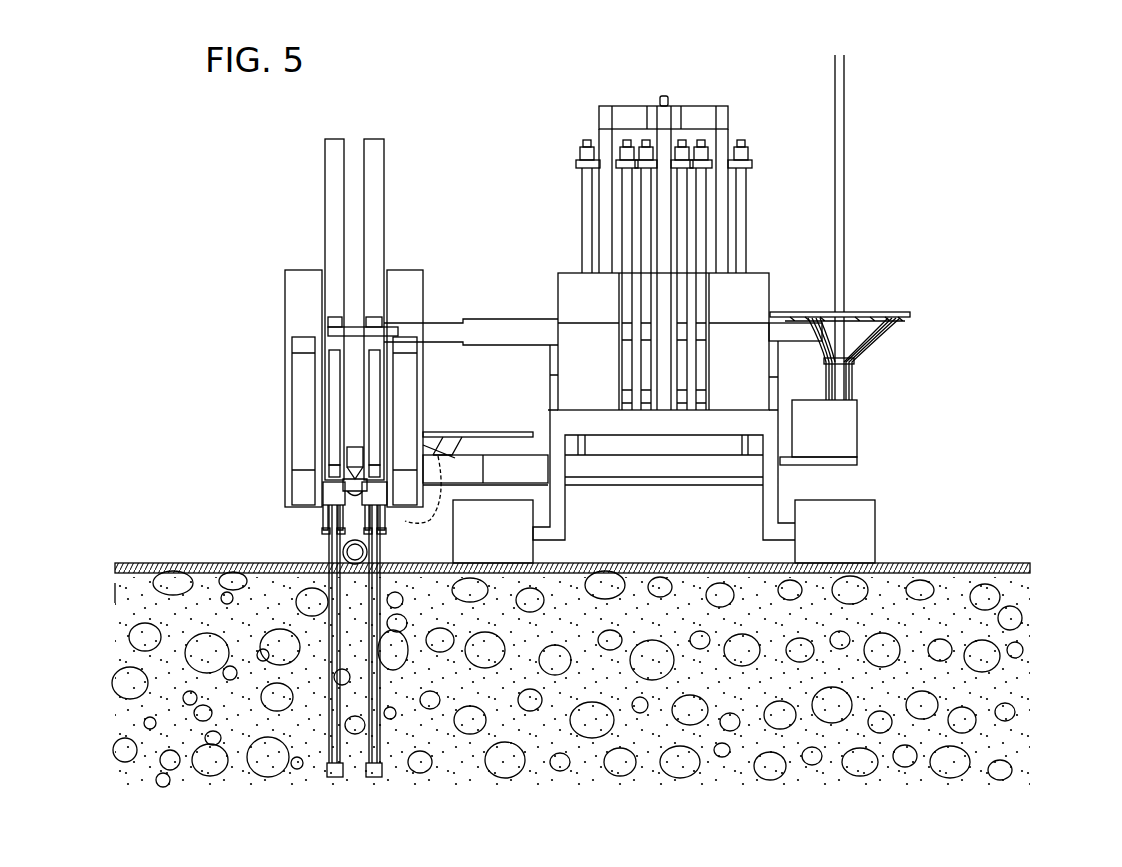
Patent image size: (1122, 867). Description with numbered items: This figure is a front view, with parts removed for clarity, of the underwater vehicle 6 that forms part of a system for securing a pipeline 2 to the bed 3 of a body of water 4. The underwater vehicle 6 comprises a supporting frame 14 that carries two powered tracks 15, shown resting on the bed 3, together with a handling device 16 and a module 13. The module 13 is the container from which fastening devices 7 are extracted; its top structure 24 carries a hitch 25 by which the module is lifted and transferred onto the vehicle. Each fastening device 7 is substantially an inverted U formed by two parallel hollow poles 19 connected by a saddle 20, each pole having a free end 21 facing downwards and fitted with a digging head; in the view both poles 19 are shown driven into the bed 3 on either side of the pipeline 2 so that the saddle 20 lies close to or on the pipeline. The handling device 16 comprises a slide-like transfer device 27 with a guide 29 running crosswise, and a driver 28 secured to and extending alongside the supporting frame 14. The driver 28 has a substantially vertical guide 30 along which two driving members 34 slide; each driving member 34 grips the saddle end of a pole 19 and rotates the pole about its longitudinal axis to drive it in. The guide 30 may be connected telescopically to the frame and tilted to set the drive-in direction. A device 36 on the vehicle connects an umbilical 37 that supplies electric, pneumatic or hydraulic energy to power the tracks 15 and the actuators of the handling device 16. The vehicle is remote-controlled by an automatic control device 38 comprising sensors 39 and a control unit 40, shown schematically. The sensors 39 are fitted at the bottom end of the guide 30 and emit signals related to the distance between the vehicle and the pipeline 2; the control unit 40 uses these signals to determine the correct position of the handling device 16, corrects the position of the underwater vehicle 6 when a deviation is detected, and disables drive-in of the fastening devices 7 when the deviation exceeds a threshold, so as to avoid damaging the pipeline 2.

The pipeline 2 is at (341, 553).
The bed 3 is at (1009, 623).
The body of water 4 is at (961, 478).
The underwater vehicle 6 is at (878, 148).
The fastening device 7 is at (532, 208).
The module 13 is at (614, 91).
The supporting frame 14 is at (789, 478).
The powered tracks 15 is at (537, 553).
The handling device 16 is at (421, 160).
The hollow poles 19 is at (330, 733).
The saddle 20 is at (336, 473).
The free end 21 is at (332, 778).
The top structure 24 is at (718, 101).
The hitch 25 is at (673, 95).
The transfer device 27 is at (788, 270).
The driver 28 is at (318, 190).
The guide 29 is at (500, 318).
The vertical guide 30 is at (299, 223).
The driving members 34 is at (331, 493).
The device 36 is at (888, 342).
The umbilical 37 is at (843, 227).
The automatic control device 38 is at (929, 390).
The sensors 39 is at (305, 508).
The control unit 40 is at (845, 426).